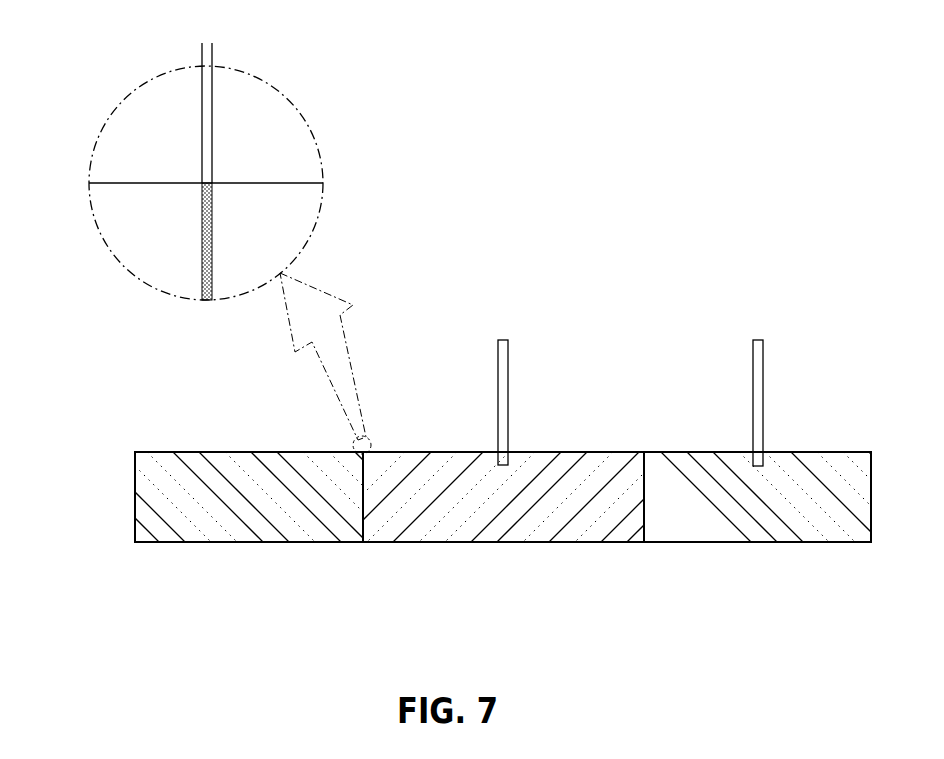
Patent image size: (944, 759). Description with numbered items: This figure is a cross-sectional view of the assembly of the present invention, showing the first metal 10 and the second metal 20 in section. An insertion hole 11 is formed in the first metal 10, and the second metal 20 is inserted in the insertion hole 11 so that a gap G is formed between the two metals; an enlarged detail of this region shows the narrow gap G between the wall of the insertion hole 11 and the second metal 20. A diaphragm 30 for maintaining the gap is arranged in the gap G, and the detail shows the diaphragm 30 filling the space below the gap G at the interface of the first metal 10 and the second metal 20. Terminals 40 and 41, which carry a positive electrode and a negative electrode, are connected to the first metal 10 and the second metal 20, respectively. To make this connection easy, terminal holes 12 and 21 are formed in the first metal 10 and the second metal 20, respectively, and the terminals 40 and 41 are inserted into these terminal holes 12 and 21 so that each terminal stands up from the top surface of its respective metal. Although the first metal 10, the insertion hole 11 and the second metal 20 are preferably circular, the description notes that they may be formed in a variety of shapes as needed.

The first metal 10 is at (128, 534).
The insertion hole 11 is at (202, 228).
The terminal hole 12 is at (757, 467).
The second metal 20 is at (325, 200).
The terminal hole 21 is at (500, 467).
The diaphragm 30 is at (206, 300).
The terminal 40 is at (758, 367).
The terminal 41 is at (505, 366).
The gap G is at (173, 50).